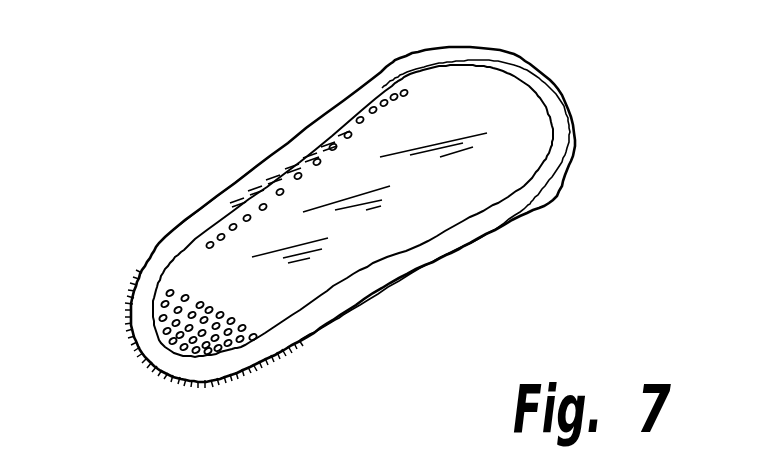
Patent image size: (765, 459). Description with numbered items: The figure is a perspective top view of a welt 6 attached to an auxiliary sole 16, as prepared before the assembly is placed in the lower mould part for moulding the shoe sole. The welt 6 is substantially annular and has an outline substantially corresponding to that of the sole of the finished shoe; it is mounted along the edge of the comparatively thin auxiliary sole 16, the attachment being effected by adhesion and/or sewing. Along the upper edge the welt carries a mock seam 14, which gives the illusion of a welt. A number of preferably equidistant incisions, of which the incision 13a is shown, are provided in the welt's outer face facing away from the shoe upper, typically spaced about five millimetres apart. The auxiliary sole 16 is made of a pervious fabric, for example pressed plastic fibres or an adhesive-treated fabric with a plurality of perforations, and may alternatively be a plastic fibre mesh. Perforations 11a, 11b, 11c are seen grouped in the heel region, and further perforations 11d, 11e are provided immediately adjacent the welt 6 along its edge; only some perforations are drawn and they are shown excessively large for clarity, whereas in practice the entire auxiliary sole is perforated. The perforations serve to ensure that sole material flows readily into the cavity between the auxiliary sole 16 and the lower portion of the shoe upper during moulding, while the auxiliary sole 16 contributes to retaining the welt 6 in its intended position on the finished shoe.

The welt 6 is at (567, 154).
The perforation 11a is at (167, 347).
The perforation 11b is at (265, 367).
The perforation 11c is at (163, 290).
The perforation 11d is at (345, 128).
The perforation 11e is at (366, 125).
The incision 13a is at (325, 320).
The mock seam 14 is at (267, 163).
The auxiliary sole 16 is at (433, 203).